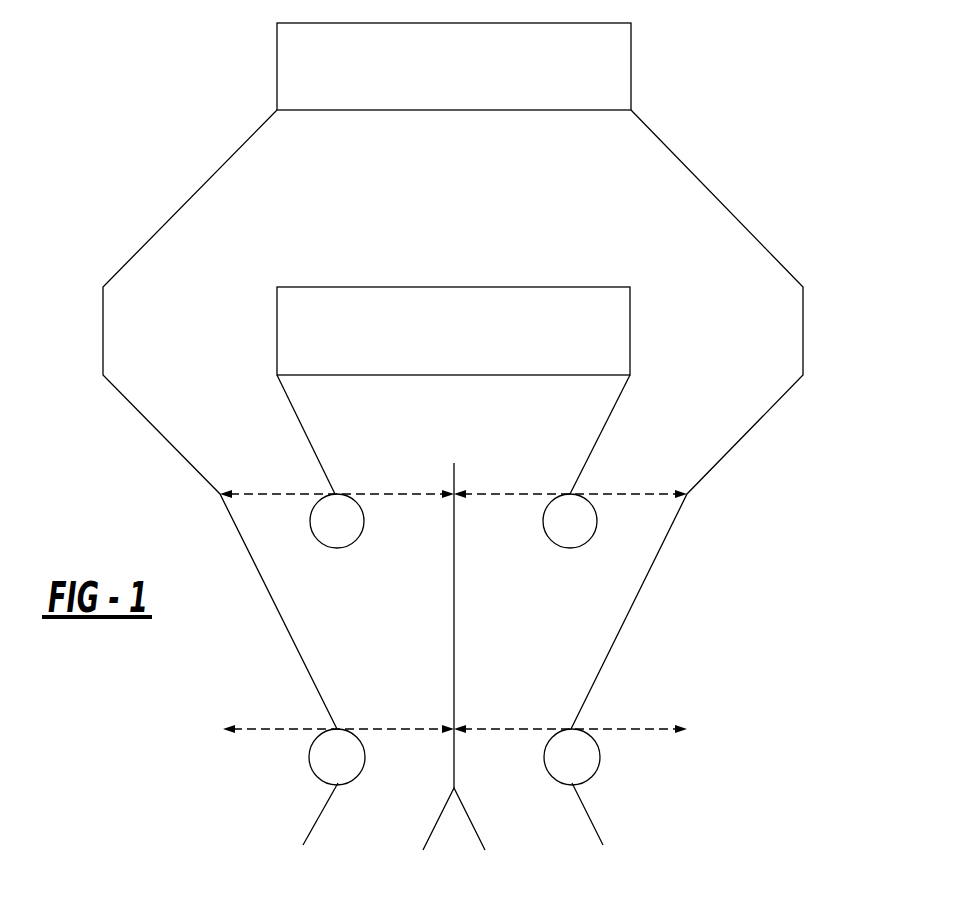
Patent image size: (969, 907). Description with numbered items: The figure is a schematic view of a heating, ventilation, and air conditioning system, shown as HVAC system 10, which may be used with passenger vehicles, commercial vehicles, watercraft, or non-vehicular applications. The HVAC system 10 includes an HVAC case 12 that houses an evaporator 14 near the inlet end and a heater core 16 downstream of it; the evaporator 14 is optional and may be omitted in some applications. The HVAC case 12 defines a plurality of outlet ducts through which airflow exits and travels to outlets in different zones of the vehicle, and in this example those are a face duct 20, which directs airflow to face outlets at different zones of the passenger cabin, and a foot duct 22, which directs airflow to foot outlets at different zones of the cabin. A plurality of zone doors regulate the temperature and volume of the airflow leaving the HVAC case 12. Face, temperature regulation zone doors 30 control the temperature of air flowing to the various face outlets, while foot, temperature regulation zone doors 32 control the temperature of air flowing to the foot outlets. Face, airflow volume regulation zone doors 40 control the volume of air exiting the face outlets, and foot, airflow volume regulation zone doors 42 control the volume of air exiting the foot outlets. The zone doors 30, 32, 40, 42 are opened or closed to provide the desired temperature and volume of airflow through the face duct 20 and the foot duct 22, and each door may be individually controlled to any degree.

The HVAC system 10 is at (160, 58).
The HVAC case 12 is at (737, 217).
The evaporator 14 is at (631, 70).
The heater core 16 is at (493, 287).
The face duct 20 is at (588, 815).
The foot duct 22 is at (317, 822).
The face, temperature regulation zone doors 30 is at (588, 542).
The foot, temperature regulation zone doors 32 is at (332, 550).
The face, airflow volume regulation zone doors 40 is at (585, 782).
The foot, airflow volume regulation zone doors 42 is at (312, 765).